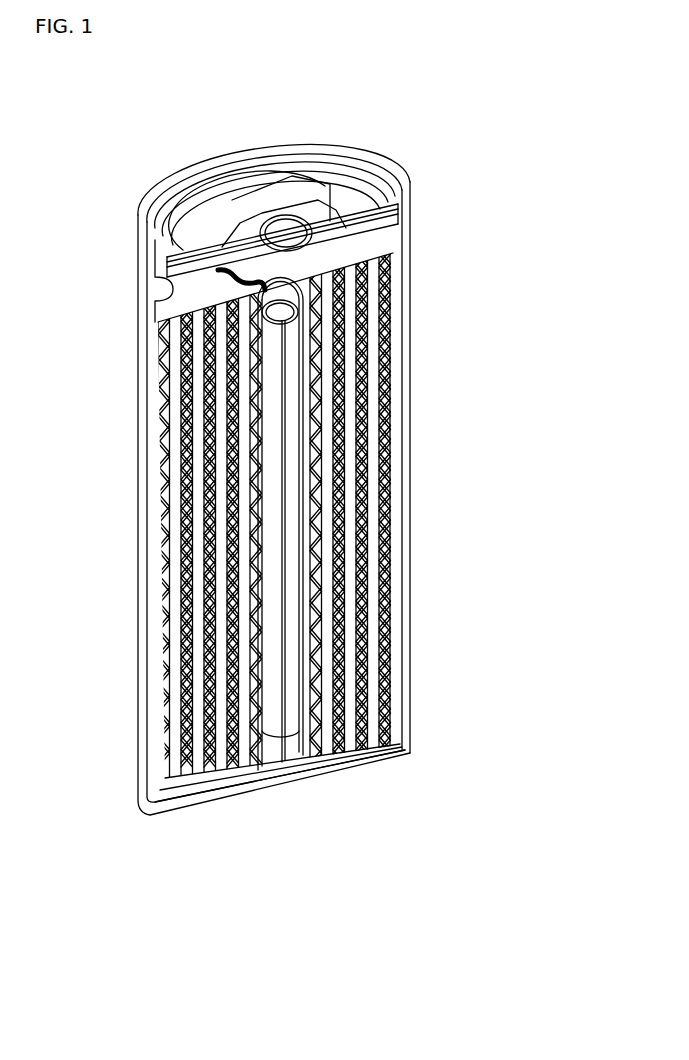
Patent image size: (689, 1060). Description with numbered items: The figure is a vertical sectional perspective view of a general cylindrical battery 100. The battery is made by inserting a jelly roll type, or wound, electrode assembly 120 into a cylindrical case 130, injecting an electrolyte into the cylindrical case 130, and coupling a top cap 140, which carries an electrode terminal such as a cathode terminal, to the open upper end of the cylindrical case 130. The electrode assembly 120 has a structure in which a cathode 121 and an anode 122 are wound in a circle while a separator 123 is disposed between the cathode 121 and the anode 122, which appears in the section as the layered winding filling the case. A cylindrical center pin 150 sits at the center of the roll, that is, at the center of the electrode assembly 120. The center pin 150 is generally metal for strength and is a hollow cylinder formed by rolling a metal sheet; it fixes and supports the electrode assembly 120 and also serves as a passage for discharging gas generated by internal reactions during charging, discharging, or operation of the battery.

The cylindrical battery 100 is at (93, 154).
The jelly roll type electrode assembly 120 is at (503, 835).
The cathode 121 is at (410, 752).
The anode 122 is at (380, 753).
The separator 123 is at (350, 753).
The cylindrical case 130 is at (410, 455).
The top cap 140 is at (418, 180).
The center pin 150 is at (270, 532).